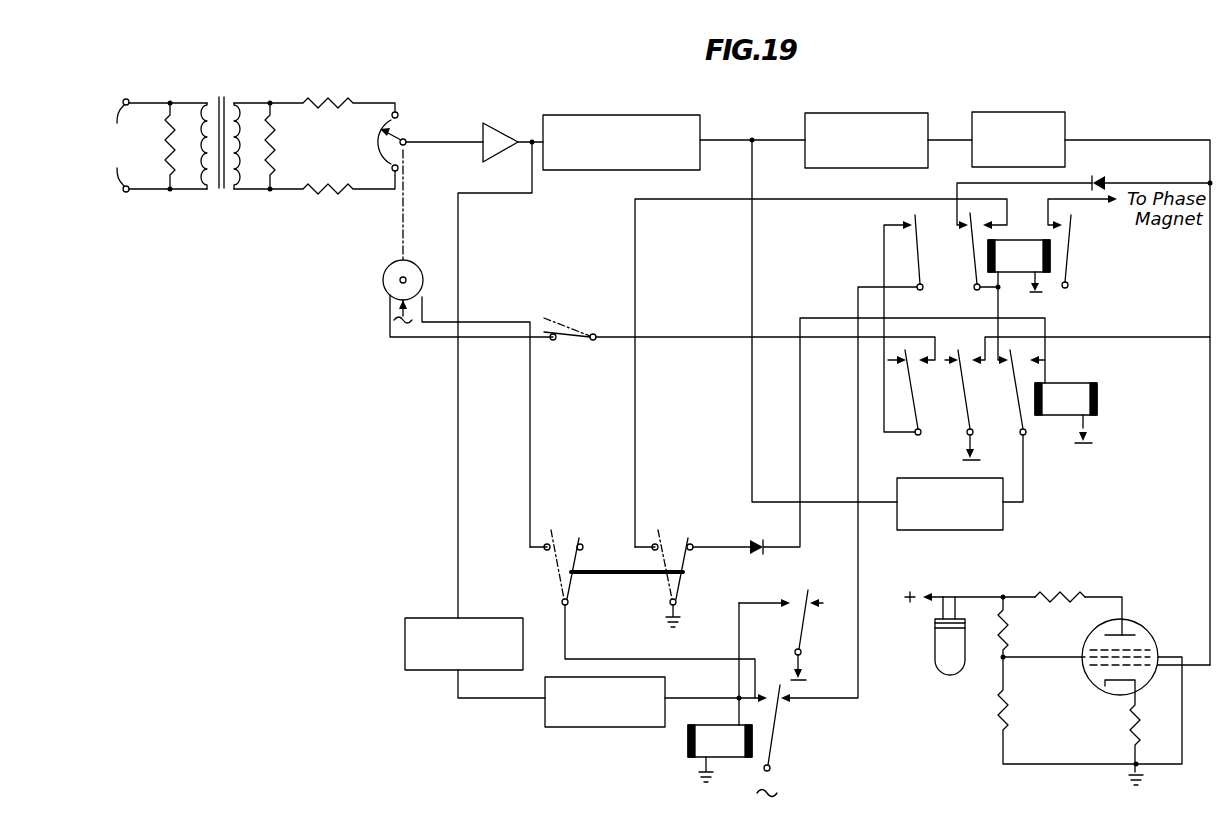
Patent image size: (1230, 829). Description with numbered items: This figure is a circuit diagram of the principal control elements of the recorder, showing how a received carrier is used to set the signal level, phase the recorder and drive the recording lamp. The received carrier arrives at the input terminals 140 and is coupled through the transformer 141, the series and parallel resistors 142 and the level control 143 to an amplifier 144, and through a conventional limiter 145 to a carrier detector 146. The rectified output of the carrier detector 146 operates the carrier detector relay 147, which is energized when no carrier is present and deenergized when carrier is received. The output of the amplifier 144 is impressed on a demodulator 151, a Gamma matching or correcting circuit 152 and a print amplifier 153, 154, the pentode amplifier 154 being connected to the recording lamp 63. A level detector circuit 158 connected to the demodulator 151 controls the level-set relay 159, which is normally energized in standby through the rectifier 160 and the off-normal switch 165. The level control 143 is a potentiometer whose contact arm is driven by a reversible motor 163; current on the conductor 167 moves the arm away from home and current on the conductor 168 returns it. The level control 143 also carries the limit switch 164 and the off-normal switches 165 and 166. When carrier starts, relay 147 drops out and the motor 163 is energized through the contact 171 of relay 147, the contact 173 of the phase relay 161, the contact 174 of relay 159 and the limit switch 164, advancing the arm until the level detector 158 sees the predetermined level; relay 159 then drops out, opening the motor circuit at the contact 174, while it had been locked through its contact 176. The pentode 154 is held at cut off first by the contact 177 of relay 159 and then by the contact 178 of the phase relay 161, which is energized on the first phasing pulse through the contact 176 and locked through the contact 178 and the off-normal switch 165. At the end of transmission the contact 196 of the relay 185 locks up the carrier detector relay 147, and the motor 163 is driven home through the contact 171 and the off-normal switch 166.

The input terminals 140 is at (150, 145).
The transformer 141 is at (208, 190).
The series and parallel resistors 142 is at (275, 149).
The level control 143 is at (404, 132).
The amplifier 144 is at (486, 122).
The demodulator 151 is at (601, 115).
The Gamma matching or correcting circuit 152 is at (868, 113).
The print amplifier 153 is at (1010, 112).
The reversible motor 163 is at (382, 280).
The conductor 167 is at (406, 337).
The conductor 168 is at (496, 322).
The limit switch 164 is at (566, 347).
The contact of relay 161 173 is at (912, 246).
The contact of relay 161 178 is at (972, 240).
The phase relay 161 is at (1028, 275).
The contact of relay 159 174 is at (911, 401).
The contact of relay 159 177 is at (964, 386).
The contact of relay 159 176 is at (1013, 380).
The level-set relay 159 is at (1080, 383).
The level detector circuit 158 is at (977, 530).
The off-normal switch 166 is at (570, 589).
The off-normal switch 165 is at (683, 580).
The rectifier 160 is at (757, 544).
The relay 185 is at (798, 621).
The contact of relay 185 196 is at (807, 603).
The limiter 145 is at (412, 670).
The carrier detector 146 is at (582, 727).
The carrier detector relay 147 is at (688, 741).
The contact of relay 147 171 is at (778, 720).
The pentode amplifier 154 is at (1138, 629).
The recording lamp 63 is at (948, 676).